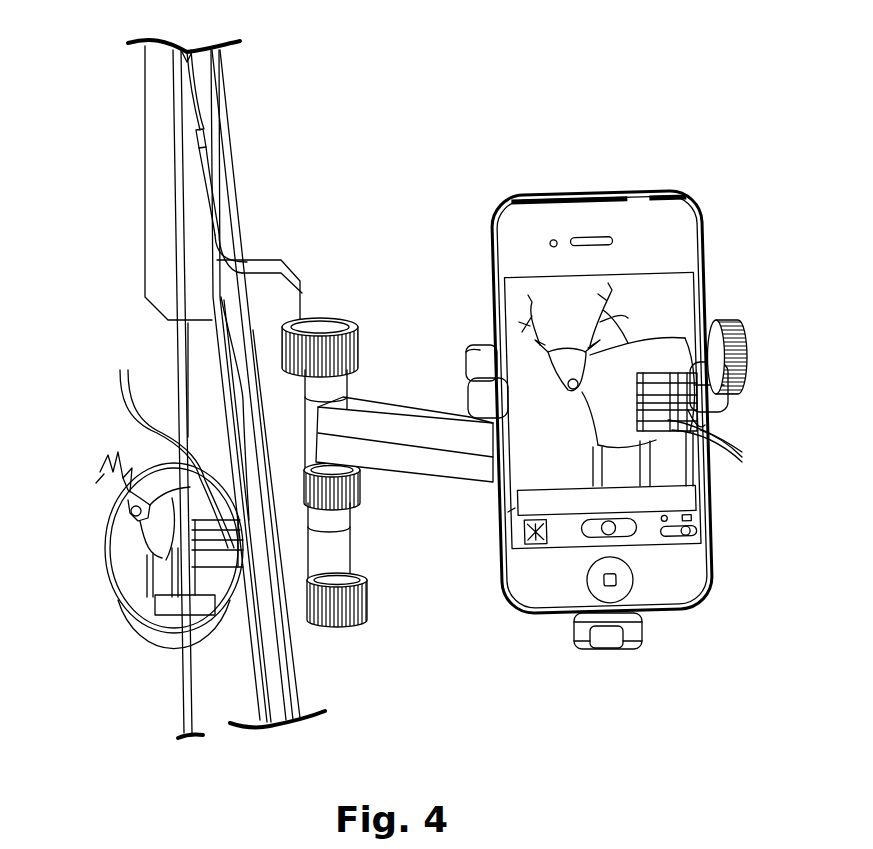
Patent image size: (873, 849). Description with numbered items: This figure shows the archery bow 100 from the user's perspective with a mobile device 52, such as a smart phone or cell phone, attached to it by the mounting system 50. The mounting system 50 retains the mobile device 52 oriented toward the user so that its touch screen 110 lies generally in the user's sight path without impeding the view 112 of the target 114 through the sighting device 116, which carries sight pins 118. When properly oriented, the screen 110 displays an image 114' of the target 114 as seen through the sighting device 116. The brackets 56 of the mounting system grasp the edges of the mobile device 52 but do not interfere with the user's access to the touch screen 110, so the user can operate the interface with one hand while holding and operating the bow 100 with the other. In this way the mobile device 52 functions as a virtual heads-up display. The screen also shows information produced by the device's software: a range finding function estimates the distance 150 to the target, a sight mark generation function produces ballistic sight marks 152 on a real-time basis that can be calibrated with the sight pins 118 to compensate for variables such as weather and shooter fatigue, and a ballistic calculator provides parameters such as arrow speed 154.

The archery bow 100 is at (283, 268).
The sight pins 118 is at (172, 448).
The view 112 is at (135, 573).
The target 114 is at (110, 524).
The sighting device 116 is at (168, 622).
The mounting system 50 is at (411, 445).
The brackets 56 is at (465, 345).
The mobile device 52 is at (668, 215).
The touch screen 110 is at (658, 290).
The image of the target 114' is at (640, 374).
The arrow speed 154 is at (692, 493).
The ballistic sight marks 152 is at (720, 443).
The distance 150 is at (515, 508).